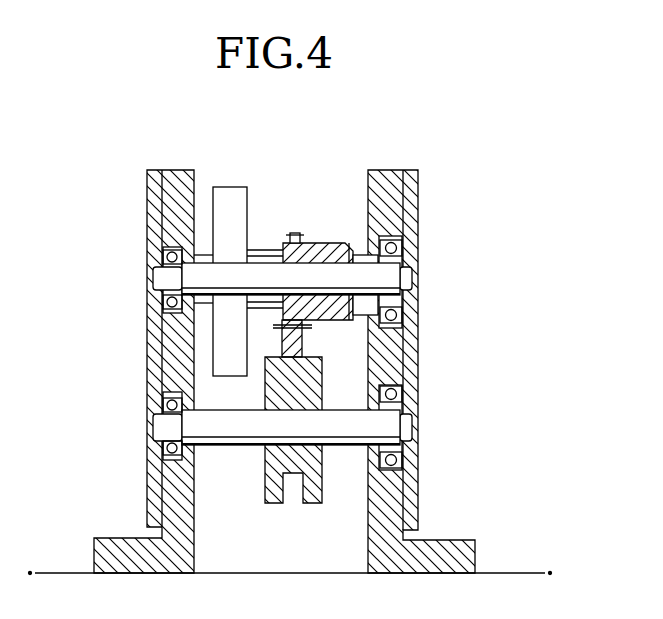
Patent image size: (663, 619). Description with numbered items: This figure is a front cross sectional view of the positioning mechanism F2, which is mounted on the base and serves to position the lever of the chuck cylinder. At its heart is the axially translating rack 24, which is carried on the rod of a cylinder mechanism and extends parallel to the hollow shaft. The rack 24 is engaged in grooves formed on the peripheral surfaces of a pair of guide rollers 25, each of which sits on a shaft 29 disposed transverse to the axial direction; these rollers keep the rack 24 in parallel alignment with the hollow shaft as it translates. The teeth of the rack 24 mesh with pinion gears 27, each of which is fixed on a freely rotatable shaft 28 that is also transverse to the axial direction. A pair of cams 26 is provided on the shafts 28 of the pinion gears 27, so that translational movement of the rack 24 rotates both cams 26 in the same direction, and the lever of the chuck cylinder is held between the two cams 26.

The positioning mechanism F2 is at (352, 162).
The axially translating rack 24 is at (303, 342).
The guide roller 25 is at (312, 503).
The cam 26 is at (229, 195).
The pinion gear 27 is at (292, 236).
The freely rotatable shaft 28 is at (207, 300).
The shaft 29 is at (229, 455).